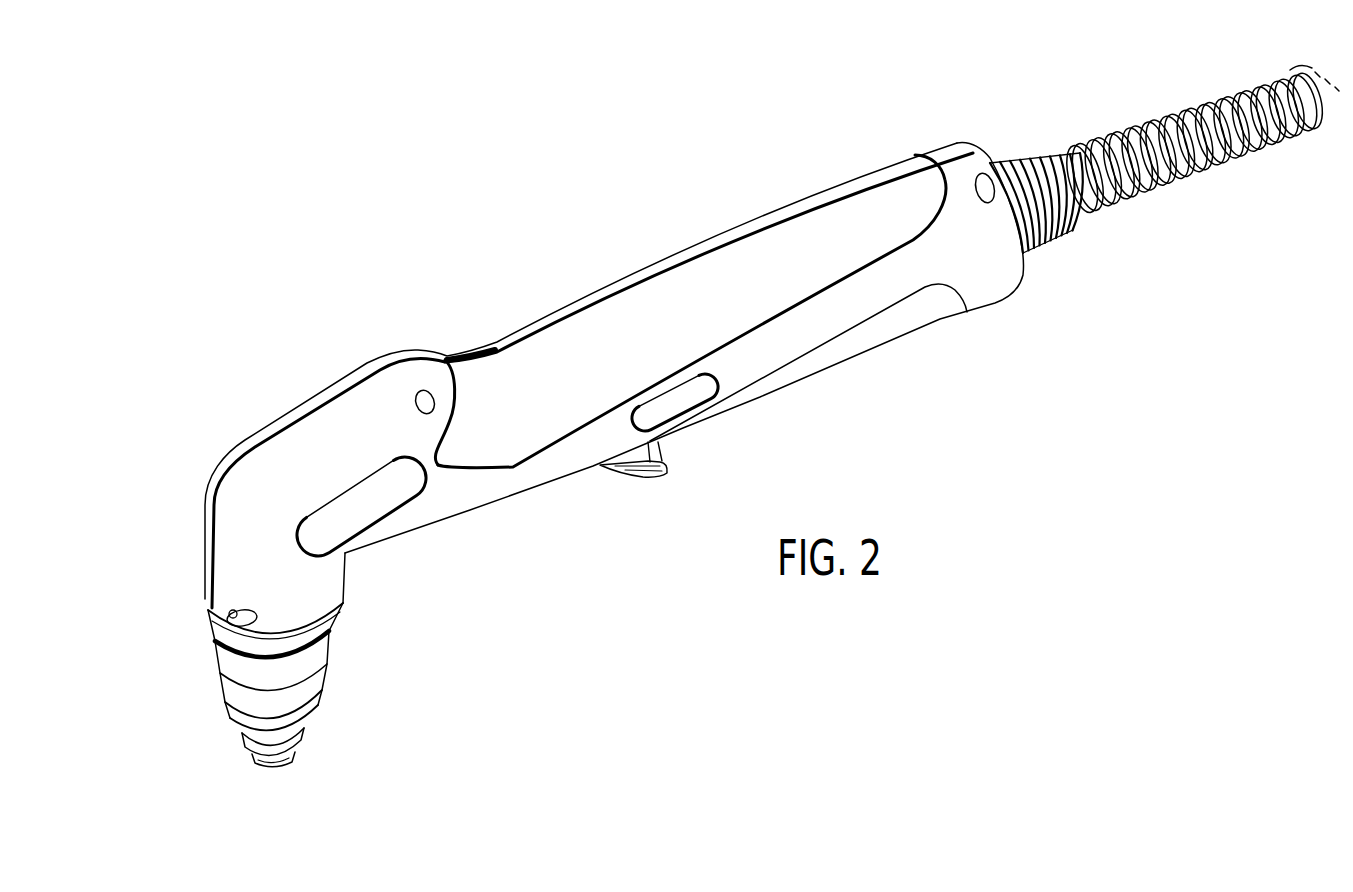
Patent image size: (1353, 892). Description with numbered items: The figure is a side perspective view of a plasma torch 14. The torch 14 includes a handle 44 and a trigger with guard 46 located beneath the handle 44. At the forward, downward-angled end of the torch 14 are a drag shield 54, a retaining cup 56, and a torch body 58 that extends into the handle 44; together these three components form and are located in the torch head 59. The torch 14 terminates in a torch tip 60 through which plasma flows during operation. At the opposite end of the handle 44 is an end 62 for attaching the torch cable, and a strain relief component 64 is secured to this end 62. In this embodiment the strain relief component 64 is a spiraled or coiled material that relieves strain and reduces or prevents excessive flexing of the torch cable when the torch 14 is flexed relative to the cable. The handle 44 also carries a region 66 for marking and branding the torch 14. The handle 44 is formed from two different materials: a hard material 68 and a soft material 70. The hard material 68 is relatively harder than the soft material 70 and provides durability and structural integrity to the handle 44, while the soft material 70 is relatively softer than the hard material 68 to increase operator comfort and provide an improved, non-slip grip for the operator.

The torch 14 is at (843, 127).
The handle 44 is at (597, 293).
The trigger with guard 46 is at (650, 478).
The drag shield 54 is at (240, 735).
The retaining cup 56 is at (228, 708).
The torch body 58 is at (218, 652).
The torch head 59 is at (198, 672).
The torch tip 60 is at (278, 763).
The end 62 is at (945, 144).
The strain relief component 64 is at (1192, 100).
The region 66 is at (370, 515).
The hard material 68 is at (380, 395).
The soft material 70 is at (747, 222).